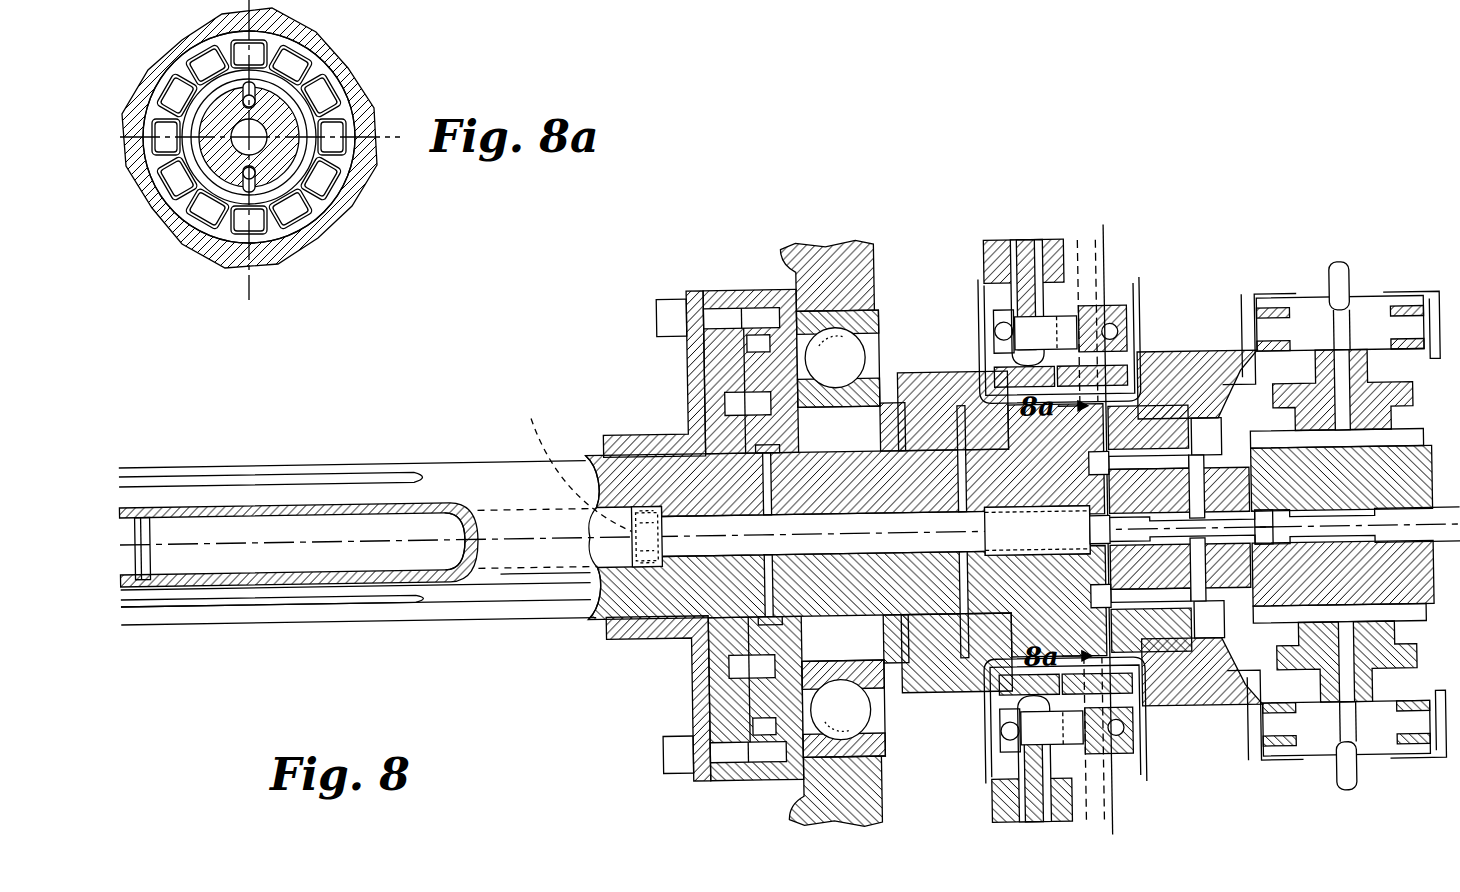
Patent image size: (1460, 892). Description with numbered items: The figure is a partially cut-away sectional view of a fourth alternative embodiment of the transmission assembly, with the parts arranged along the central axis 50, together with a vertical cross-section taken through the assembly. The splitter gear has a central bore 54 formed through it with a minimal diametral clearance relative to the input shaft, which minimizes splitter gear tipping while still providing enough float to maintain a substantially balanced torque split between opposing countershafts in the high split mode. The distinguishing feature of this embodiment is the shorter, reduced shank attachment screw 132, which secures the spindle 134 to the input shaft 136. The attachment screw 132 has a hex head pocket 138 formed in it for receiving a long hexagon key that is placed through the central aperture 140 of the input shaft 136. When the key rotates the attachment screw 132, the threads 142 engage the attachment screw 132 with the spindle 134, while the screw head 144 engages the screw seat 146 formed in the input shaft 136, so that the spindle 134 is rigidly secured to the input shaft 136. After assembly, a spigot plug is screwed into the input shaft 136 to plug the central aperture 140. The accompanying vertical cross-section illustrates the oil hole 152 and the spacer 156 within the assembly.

In FIG. 8, the central axis 50 is at (358, 512).
In FIG. 8A, the central bore 54 is at (233, 188).
In FIG. 8, the attachment screw 132 is at (656, 537).
In FIG. 8, the spindle 134 is at (1184, 484).
In FIG. 8, the input shaft 136 is at (555, 574).
In FIG. 8, the hex head pocket 138 is at (569, 451).
In FIG. 8, the central aperture 140 is at (439, 597).
In FIG. 8, the threads 142 is at (1009, 420).
In FIG. 8, the screw head 144 is at (613, 468).
In FIG. 8, the screw seat 146 is at (612, 603).
In FIG. 8A, the oil hole 152 is at (255, 102).
In FIG. 8A, the spacer 156 is at (290, 110).